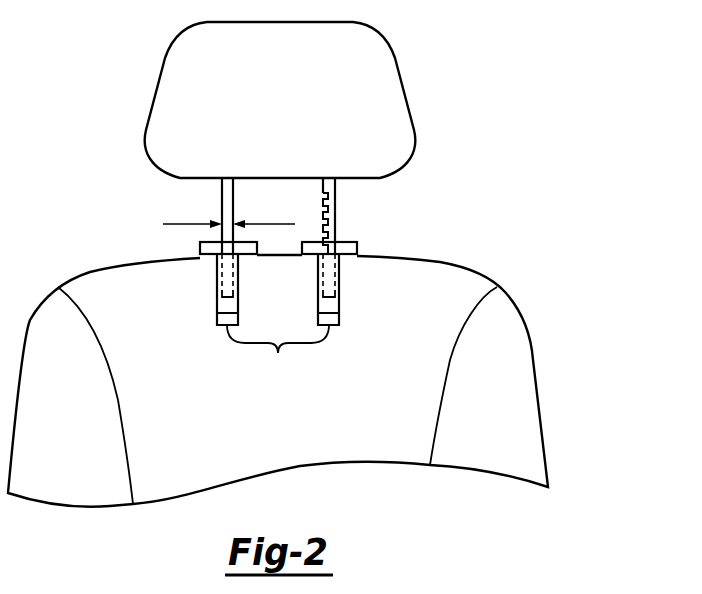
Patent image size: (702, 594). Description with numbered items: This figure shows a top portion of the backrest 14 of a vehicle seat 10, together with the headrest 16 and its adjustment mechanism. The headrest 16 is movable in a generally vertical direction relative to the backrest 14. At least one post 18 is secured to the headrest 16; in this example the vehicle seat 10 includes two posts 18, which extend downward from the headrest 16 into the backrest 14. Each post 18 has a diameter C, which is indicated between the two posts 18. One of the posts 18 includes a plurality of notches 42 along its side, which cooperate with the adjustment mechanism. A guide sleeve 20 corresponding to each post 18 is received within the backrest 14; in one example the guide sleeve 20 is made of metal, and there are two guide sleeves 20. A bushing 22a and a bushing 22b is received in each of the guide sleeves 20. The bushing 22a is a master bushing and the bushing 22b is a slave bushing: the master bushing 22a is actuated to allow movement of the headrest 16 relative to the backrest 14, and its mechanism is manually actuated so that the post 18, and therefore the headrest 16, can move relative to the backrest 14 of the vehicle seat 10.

The vehicle seat 10 is at (556, 138).
The backrest 14 is at (520, 437).
The headrest 16 is at (378, 95).
The post 18 is at (222, 193).
The guide sleeve 20 is at (278, 357).
The master bushing 22a is at (217, 288).
The slave bushing 22b is at (339, 288).
The notches 42 is at (319, 222).
The post diameter C is at (220, 224).